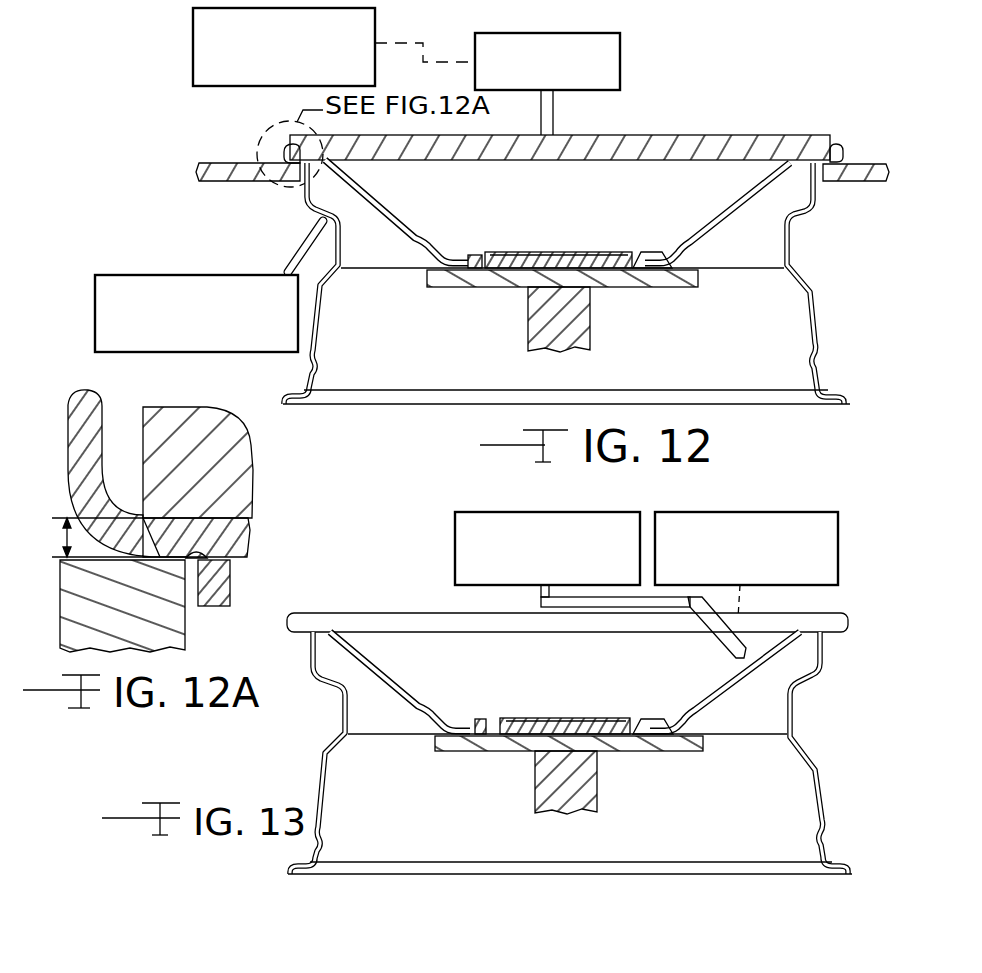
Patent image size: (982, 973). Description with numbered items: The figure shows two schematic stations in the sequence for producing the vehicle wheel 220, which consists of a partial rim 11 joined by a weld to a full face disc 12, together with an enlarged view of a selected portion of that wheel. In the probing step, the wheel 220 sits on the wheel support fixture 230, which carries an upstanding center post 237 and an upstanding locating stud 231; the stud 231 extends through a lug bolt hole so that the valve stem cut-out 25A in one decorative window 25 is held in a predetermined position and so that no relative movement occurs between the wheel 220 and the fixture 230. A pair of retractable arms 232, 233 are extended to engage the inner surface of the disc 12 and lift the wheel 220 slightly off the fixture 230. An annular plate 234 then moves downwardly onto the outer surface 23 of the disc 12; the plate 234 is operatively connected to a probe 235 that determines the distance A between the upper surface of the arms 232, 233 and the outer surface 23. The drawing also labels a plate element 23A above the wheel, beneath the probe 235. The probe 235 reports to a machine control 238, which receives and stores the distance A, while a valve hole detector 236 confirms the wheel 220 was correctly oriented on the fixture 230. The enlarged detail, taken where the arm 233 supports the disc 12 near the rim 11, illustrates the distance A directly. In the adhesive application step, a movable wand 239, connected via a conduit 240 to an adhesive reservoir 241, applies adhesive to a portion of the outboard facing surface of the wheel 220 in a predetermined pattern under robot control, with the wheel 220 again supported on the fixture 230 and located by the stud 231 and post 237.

In FIG. 12, the machine control 238 is at (193, 50).
In FIG. 12, the probe 235 is at (622, 58).
In FIG. 12, the press plate 23A is at (668, 134).
In FIG. 12, the retractable arm 232 is at (857, 162).
In FIG. 12, the retractable arm 233 is at (207, 162).
In FIG. 12A, the retractable arm 233 is at (186, 628).
In FIG. 12, the cut-out 25A is at (350, 182).
In FIG. 12, the decorative window 25 is at (396, 216).
In FIG. 12, the locating stud 231 is at (475, 254).
In FIG. 13, the locating stud 231 is at (488, 690).
In FIG. 12, the center post 237 is at (588, 250).
In FIG. 13, the center post 237 is at (586, 690).
In FIG. 12, the valve hole detector 236 is at (218, 274).
In FIG. 12, the vehicle wheel 220 is at (822, 318).
In FIG. 13, the vehicle wheel 220 is at (828, 755).
In FIG. 12, the wheel support fixture 230 is at (594, 312).
In FIG. 13, the wheel support fixture 230 is at (601, 778).
In FIG. 12A, the disc 12 is at (80, 404).
In FIG. 12A, the outer surface 23 is at (232, 505).
In FIG. 12A, the annular plate 234 is at (252, 448).
In FIG. 12A, the distance A is at (66, 538).
In FIG. 12A, the rim 11 is at (232, 584).
In FIG. 13, the adhesive reservoir 241 is at (455, 578).
In FIG. 13, the conduit 240 is at (570, 610).
In FIG. 13, the movable wand 239 is at (712, 638).